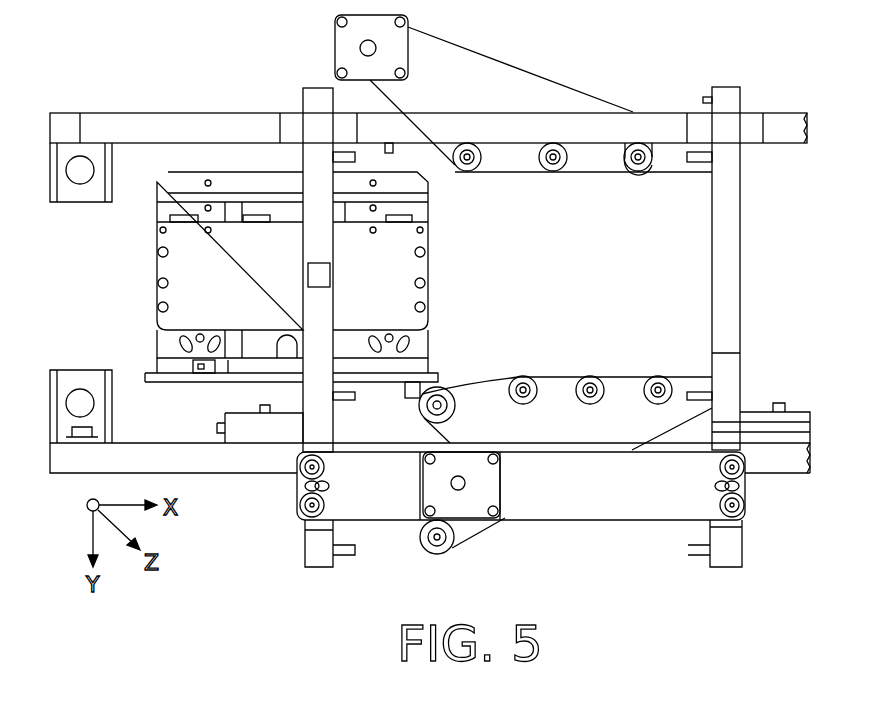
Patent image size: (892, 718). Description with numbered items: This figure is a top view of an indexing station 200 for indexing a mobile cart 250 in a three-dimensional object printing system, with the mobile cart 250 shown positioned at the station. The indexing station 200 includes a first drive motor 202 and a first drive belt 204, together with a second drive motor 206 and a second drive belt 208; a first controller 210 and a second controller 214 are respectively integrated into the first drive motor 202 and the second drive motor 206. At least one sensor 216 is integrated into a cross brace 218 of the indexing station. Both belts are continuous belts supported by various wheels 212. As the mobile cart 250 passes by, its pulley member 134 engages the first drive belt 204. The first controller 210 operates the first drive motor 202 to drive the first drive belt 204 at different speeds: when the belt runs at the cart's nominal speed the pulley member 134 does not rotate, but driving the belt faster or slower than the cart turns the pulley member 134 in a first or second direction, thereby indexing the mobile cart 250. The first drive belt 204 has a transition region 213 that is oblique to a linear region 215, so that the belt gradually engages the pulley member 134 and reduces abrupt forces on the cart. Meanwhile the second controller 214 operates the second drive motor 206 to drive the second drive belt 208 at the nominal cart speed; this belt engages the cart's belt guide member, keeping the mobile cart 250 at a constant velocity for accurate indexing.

The pulley member 134 is at (268, 362).
The indexing station 200 is at (570, 570).
The first drive motor 202 is at (428, 531).
The first drive belt 204 is at (548, 377).
The second drive motor 206 is at (318, 47).
The second drive belt 208 is at (500, 172).
The first controller 210 is at (437, 492).
The wheels 212 is at (638, 172).
The transition region 213 is at (477, 395).
The second controller 214 is at (335, 48).
The linear region 215 is at (622, 388).
The sensor 216 is at (308, 268).
The cross brace 218 is at (313, 183).
The mobile cart 250 is at (157, 270).